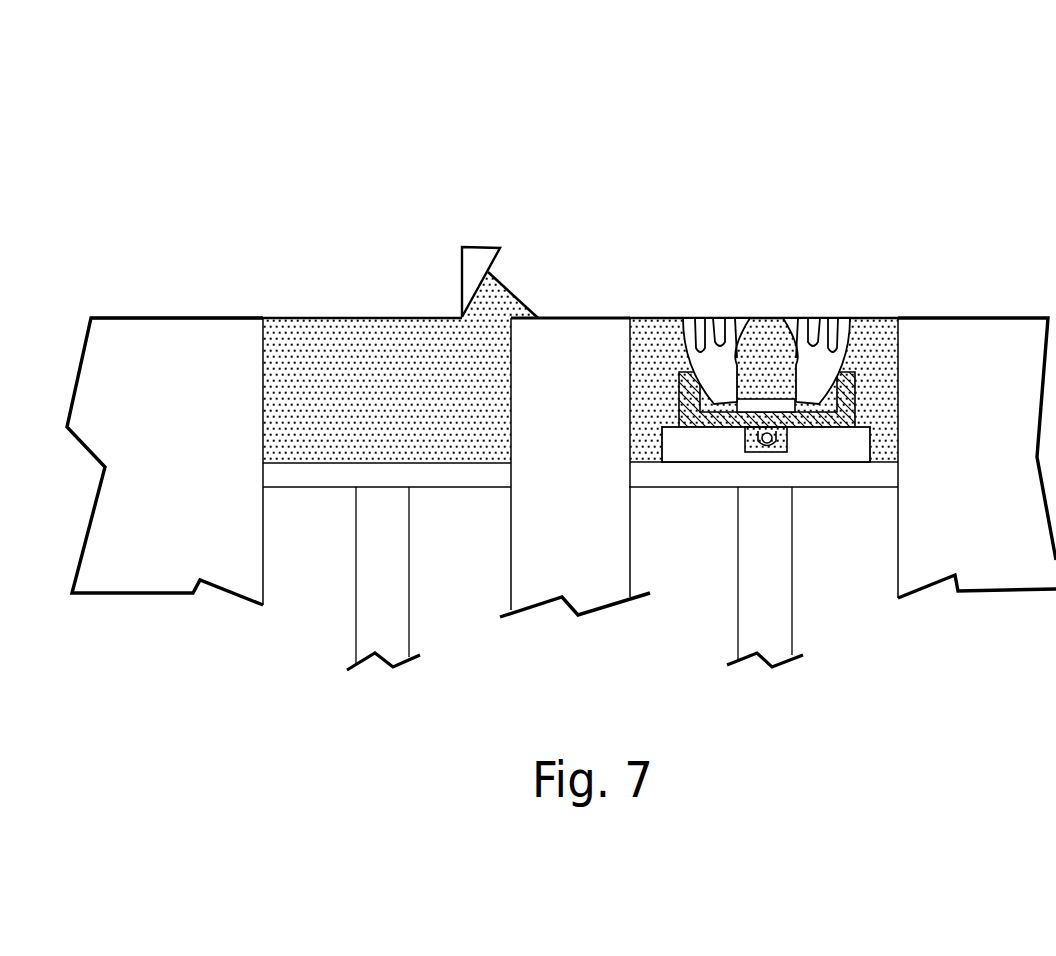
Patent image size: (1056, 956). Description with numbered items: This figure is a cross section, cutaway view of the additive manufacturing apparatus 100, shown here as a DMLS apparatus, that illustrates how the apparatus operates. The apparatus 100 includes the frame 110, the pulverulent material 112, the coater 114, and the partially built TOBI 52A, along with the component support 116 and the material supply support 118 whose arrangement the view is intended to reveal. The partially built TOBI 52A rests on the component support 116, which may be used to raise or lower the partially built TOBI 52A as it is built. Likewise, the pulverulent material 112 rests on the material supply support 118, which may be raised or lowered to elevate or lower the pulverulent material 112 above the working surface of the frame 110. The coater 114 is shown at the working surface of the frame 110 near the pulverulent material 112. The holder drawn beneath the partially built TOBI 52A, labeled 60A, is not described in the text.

The additive manufacturing apparatus 100 is at (868, 197).
The frame 110 is at (184, 447).
The pulverulent material 112 is at (880, 340).
The coater 114 is at (470, 247).
The component support 116 is at (832, 462).
The material supply support 118 is at (373, 593).
The partially built TOBI 52A is at (687, 318).
The contact holder 60A is at (737, 422).